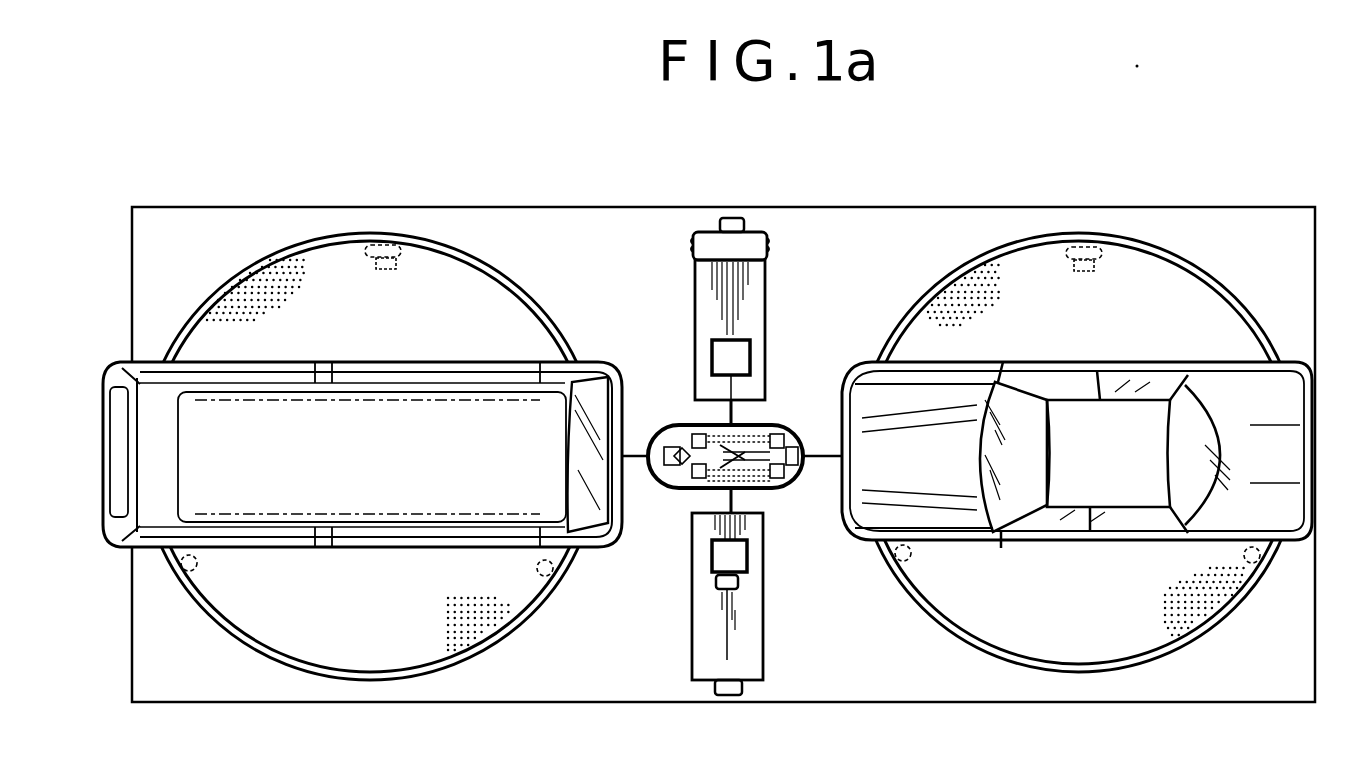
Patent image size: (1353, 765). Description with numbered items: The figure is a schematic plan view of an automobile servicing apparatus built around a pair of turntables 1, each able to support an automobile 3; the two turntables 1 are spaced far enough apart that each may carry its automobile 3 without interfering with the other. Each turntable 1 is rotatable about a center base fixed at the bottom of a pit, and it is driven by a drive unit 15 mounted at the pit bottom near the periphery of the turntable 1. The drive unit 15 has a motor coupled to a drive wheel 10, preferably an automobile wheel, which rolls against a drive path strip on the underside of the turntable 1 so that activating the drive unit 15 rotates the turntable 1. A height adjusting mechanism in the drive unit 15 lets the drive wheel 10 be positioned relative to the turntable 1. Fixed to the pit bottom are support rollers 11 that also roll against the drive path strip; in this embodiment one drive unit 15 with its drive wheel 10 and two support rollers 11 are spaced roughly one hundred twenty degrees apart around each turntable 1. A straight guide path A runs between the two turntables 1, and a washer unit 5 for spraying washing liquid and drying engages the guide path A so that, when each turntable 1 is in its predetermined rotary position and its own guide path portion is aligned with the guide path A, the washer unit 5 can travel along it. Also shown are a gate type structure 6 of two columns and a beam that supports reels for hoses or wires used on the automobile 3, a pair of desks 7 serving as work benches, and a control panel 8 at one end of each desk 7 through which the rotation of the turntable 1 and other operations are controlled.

The turntable 1 is at (330, 262).
The automobile 3 is at (470, 400).
The washer unit 5 is at (770, 490).
The gate type structure 6 is at (729, 218).
The desk 7 is at (765, 288).
The control panel 8 is at (752, 233).
The drive wheel 10 is at (385, 245).
The support roller 11 is at (196, 569).
The drive unit 15 is at (382, 270).
The guide path A is at (812, 447).